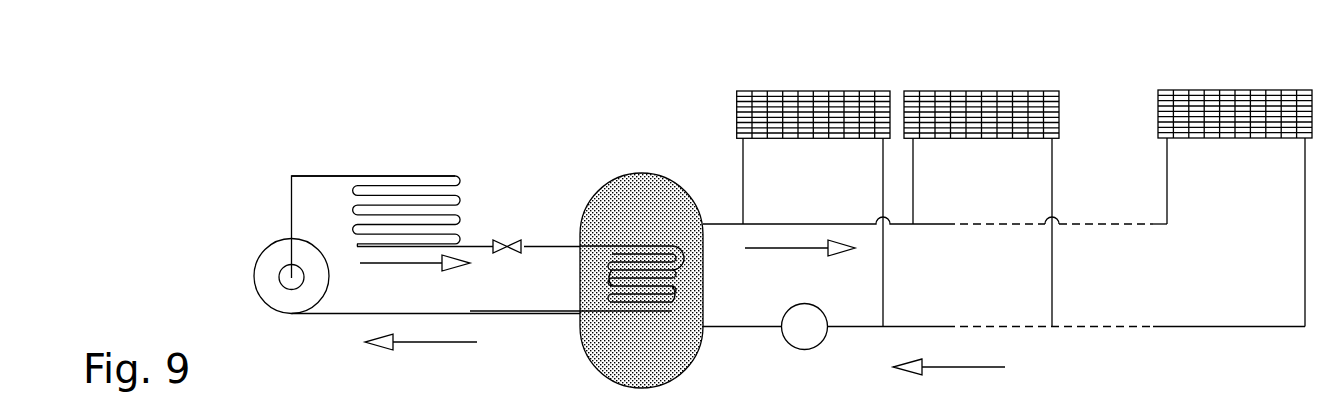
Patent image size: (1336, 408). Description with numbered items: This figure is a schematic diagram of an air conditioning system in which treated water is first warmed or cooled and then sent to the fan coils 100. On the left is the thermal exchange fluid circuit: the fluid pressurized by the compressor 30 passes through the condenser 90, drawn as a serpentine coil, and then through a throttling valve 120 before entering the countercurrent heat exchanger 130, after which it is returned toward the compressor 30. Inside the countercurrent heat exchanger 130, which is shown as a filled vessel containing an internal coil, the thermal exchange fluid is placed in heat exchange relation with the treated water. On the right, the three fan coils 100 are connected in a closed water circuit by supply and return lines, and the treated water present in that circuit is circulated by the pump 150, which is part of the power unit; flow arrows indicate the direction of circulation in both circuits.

The compressor 30 is at (267, 272).
The condenser 90 is at (416, 174).
The throttling valve 120 is at (503, 240).
The countercurrent heat exchanger 130 is at (597, 338).
The fan coils 100 is at (773, 105).
The pump 150 is at (803, 344).